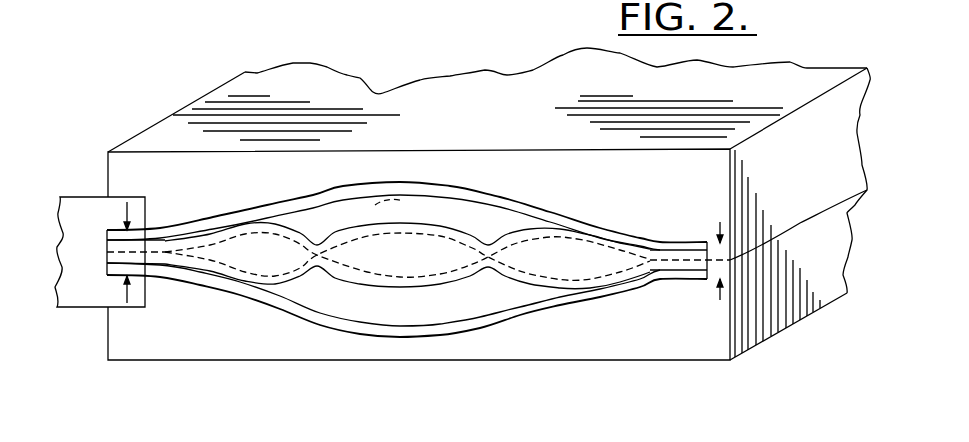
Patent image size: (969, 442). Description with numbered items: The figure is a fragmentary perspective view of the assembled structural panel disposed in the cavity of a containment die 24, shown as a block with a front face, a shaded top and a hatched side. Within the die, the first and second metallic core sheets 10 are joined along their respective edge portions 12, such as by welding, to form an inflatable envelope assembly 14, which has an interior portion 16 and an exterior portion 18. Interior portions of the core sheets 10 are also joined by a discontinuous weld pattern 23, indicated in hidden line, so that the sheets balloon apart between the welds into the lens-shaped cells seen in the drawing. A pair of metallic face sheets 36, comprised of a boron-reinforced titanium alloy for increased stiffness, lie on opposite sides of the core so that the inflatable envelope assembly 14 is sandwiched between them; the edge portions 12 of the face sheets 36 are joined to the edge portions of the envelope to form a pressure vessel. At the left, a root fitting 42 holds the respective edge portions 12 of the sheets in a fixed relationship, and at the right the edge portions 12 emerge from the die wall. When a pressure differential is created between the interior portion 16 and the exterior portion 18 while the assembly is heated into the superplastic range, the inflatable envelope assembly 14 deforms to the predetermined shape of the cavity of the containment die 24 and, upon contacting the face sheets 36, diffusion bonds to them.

The metallic core sheet 10 is at (352, 229).
The edge portion 12 is at (113, 278).
The inflatable envelope assembly 14 is at (488, 243).
The interior portion 16 is at (247, 252).
The exterior portion 18 is at (418, 306).
The discontinuous weld pattern 23 is at (410, 197).
The containment die 24 is at (710, 172).
The metallic face sheet 36 is at (557, 223).
The root fitting 42 is at (100, 243).